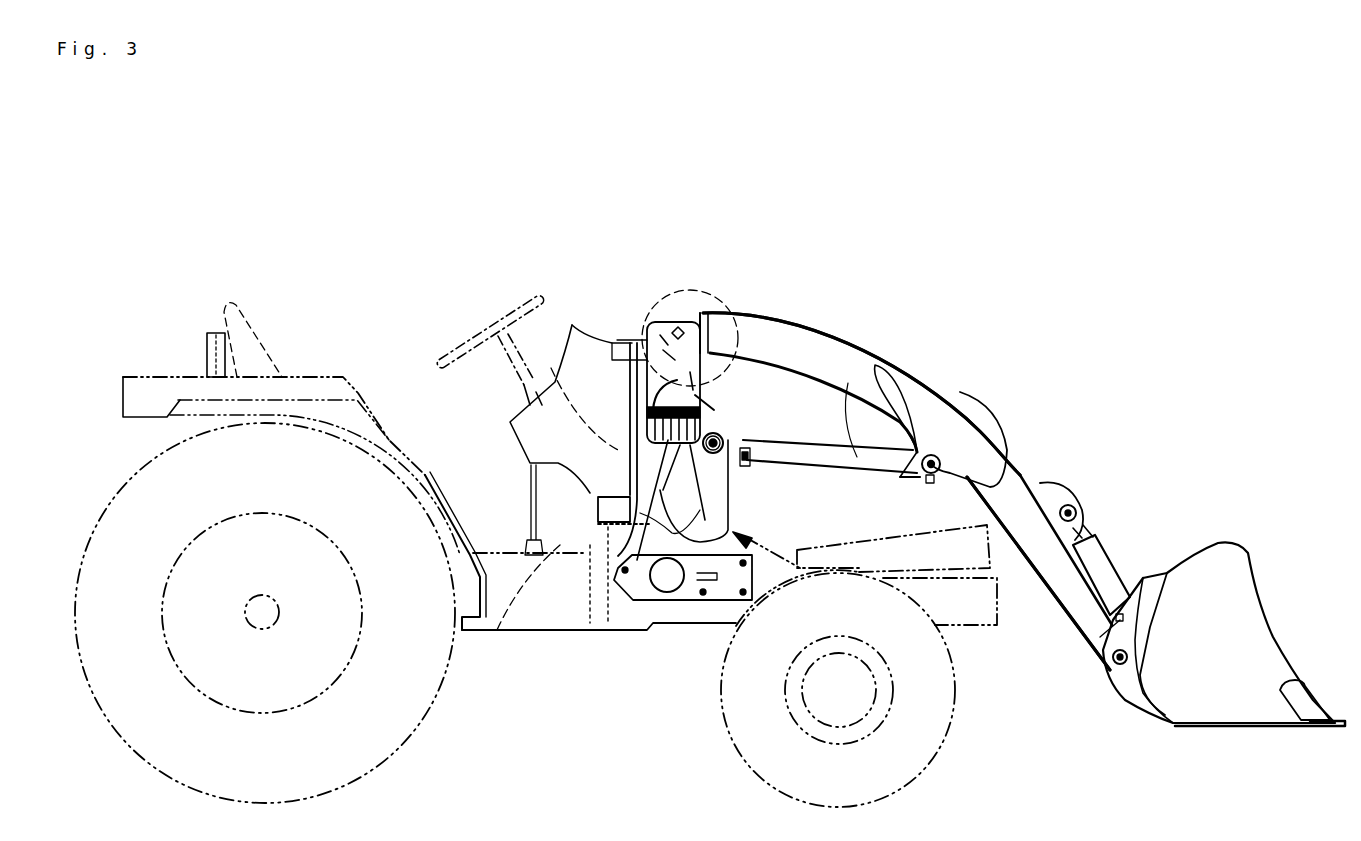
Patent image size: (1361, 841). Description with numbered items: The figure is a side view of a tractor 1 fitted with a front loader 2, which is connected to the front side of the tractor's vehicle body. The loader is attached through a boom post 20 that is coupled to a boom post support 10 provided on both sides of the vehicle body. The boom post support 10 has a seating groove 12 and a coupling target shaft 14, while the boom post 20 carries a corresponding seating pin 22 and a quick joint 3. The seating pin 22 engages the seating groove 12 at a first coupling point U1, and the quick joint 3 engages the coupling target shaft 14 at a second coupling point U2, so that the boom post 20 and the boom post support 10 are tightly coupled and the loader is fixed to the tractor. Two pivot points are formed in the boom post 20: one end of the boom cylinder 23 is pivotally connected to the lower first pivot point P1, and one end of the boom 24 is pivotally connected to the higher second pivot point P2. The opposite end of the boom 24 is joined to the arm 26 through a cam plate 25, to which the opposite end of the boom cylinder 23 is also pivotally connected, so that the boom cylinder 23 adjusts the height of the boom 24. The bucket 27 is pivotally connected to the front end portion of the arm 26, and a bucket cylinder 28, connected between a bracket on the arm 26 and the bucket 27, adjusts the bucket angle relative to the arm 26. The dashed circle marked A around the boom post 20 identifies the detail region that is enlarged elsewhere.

The tractor 1 is at (352, 263).
The front loader 2 is at (988, 263).
The quick joint 3 is at (722, 400).
The boom post support 10 is at (620, 565).
The seating groove 12 is at (683, 490).
The coupling target shaft 14 is at (500, 622).
The boom post 20 is at (655, 355).
The seating pin 22 is at (710, 548).
The boom cylinder 23 is at (873, 365).
The boom 24 is at (797, 322).
The cam plate 25 is at (950, 420).
The arm 26 is at (1070, 613).
The bucket 27 is at (1247, 710).
The bucket cylinder 28 is at (1098, 560).
The first pivot point P1 is at (728, 445).
The second pivot point P2 is at (705, 395).
The first coupling point U1 is at (777, 557).
The second coupling point U2 is at (478, 323).
The detail region A is at (682, 290).